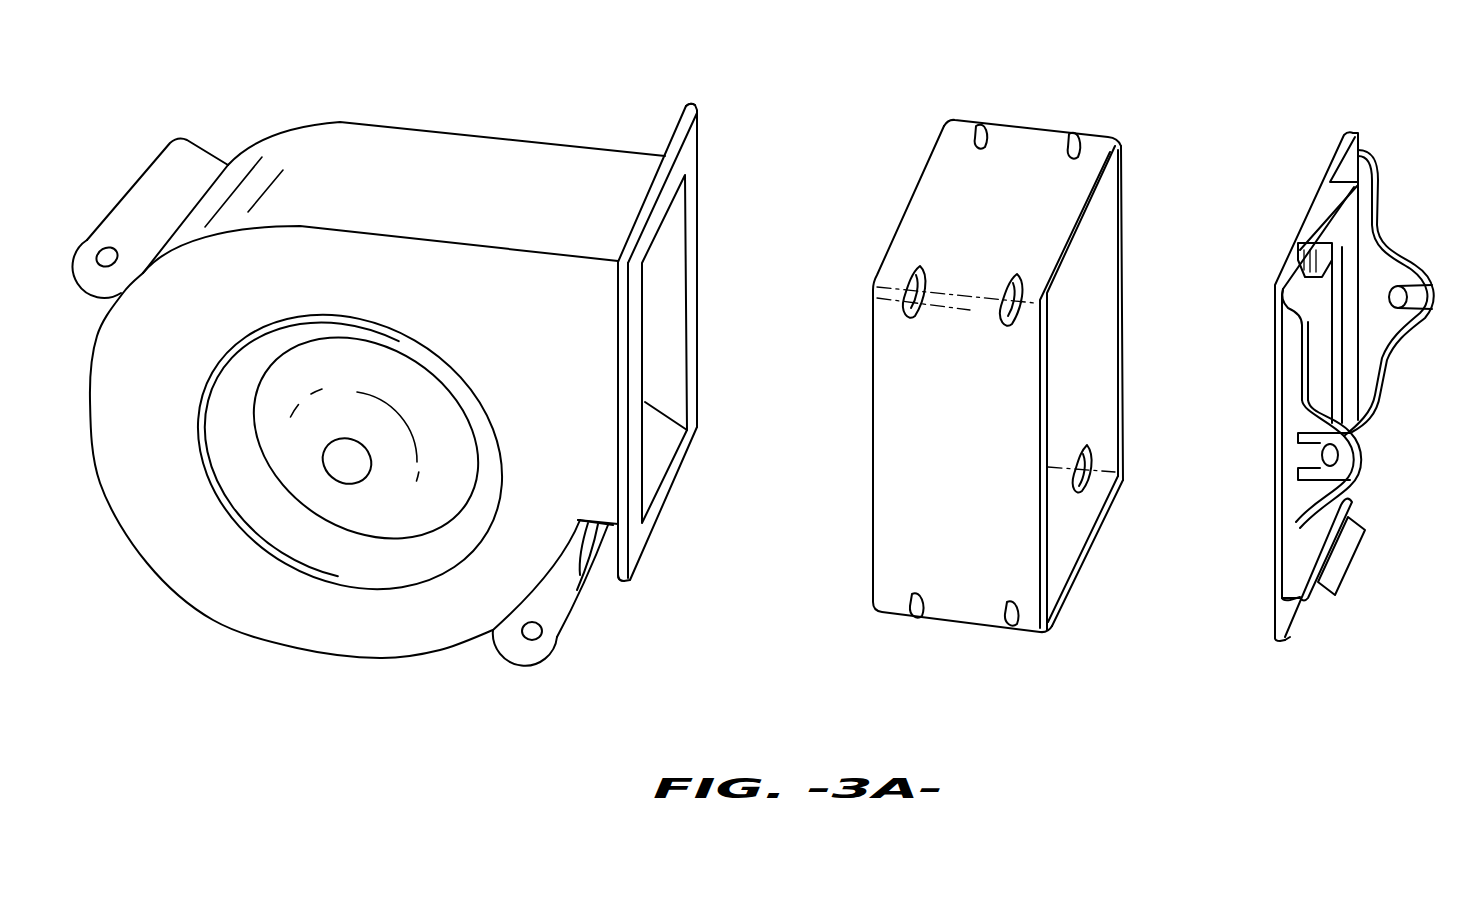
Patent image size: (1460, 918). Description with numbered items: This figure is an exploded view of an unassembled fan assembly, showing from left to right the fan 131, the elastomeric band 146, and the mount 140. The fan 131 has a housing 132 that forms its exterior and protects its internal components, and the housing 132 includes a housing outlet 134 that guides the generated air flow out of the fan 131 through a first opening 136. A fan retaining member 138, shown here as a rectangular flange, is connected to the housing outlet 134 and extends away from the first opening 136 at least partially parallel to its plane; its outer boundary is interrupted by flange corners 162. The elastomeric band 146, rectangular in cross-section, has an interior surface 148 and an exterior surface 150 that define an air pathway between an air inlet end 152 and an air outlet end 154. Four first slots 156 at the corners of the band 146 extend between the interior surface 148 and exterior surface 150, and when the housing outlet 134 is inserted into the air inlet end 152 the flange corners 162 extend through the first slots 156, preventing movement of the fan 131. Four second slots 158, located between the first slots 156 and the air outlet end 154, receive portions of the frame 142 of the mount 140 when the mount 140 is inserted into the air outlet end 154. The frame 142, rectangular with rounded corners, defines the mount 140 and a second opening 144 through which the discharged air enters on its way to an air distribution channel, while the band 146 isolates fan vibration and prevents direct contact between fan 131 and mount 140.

The fan 131 is at (332, 102).
The housing 132 is at (300, 647).
The housing outlet 134 is at (580, 575).
The first opening 136 is at (657, 323).
The fan retaining member 138 is at (647, 185).
The flange corners 162 is at (688, 105).
The exterior surface 150 is at (968, 208).
The air inlet end 152 is at (872, 477).
The air outlet end 154 is at (1083, 343).
The elastomeric band 146 is at (1125, 230).
The interior surface 148 is at (1067, 527).
The first slots 156 is at (973, 127).
The second slots 158 is at (1067, 135).
The mount 140 is at (1353, 115).
The frame 142 is at (1290, 637).
The second opening 144 is at (1318, 340).